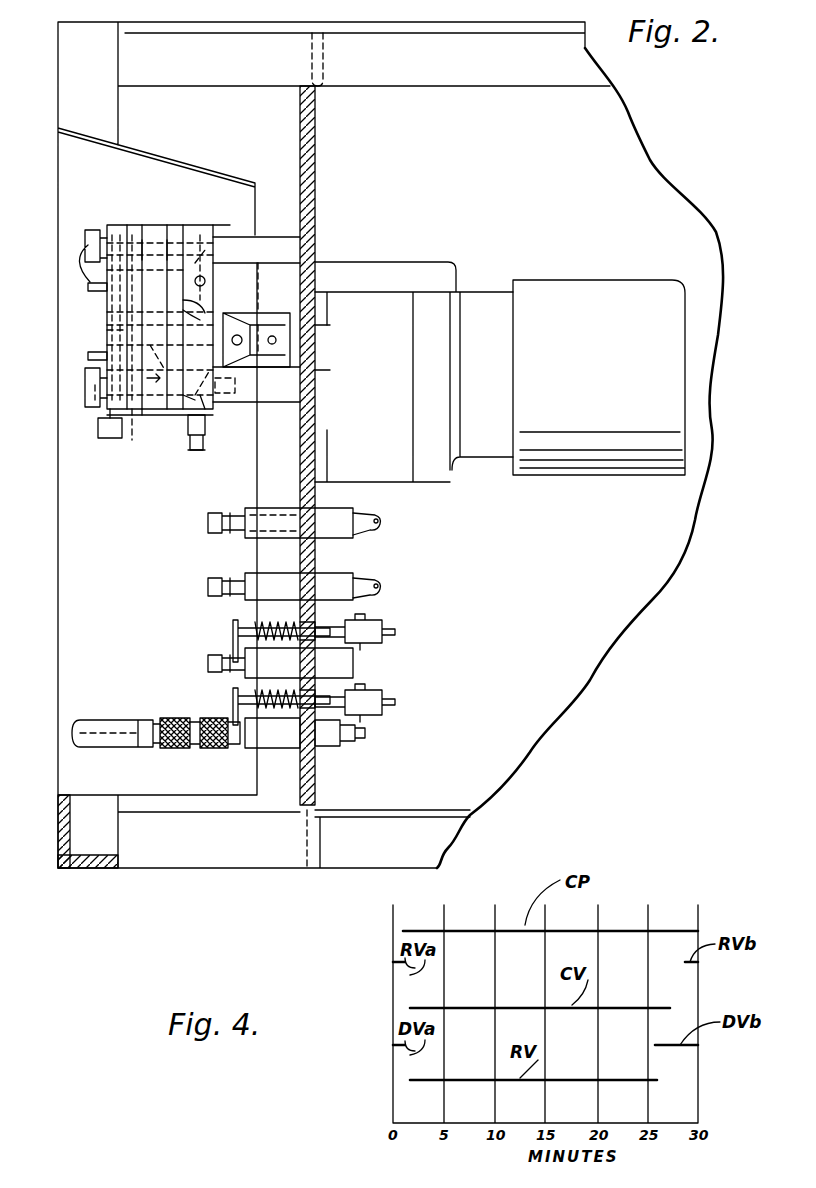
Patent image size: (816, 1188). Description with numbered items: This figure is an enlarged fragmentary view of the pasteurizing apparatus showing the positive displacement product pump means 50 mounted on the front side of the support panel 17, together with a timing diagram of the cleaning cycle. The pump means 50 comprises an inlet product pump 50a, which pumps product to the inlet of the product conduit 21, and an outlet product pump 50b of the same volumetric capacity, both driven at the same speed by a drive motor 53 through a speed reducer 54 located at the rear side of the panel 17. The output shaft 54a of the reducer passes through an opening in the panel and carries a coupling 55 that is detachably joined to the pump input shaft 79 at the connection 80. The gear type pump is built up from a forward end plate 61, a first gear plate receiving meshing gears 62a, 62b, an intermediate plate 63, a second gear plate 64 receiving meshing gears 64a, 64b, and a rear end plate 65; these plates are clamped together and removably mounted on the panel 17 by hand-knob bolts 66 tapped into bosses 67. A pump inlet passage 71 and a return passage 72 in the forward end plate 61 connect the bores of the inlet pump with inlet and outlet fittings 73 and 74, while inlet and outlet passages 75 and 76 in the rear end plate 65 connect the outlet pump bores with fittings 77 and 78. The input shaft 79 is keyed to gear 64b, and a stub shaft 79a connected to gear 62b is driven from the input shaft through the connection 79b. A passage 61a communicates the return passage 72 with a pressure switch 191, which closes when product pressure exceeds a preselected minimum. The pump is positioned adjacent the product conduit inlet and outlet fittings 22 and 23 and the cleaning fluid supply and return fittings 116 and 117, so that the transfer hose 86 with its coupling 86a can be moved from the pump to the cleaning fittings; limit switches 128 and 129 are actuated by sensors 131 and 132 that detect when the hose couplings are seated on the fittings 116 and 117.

The support panel 17 is at (316, 185).
The product conduit 21 is at (380, 520).
The inlet fitting 22 is at (240, 515).
The outlet fitting 23 is at (240, 578).
The product pump means 50 is at (155, 228).
The inlet product pump 50a is at (150, 228).
The outlet product pump 50b is at (180, 228).
The drive motor 53 is at (582, 285).
The speed reducer 54 is at (440, 270).
The output shaft 54a is at (316, 335).
The coupling 55 is at (316, 372).
The forward end plate 61 is at (117, 228).
The passage 61a is at (95, 390).
The pump gear 62a is at (127, 228).
The pump gear 62b is at (130, 412).
The intermediate plate 63 is at (150, 412).
The second gear plate 64 is at (190, 412).
The pump gear 64a is at (200, 228).
The pump gear 64b is at (200, 395).
The rear end plate 65 is at (205, 400).
The bolts 66 is at (95, 228).
The bosses 67 is at (260, 240).
The pump inlet passage 71 is at (105, 295).
The pump return passage 72 is at (105, 340).
The inlet fitting 73 is at (88, 235).
The outlet fitting 74 is at (88, 362).
The inlet passage 75 is at (210, 290).
The outlet passage 76 is at (235, 385).
The inlet fitting 77 is at (215, 240).
The outlet fitting 78 is at (200, 447).
The input shaft 79 is at (213, 305).
The stub shaft 79a is at (107, 328).
The connection 79b is at (158, 374).
The coupling connection 80 is at (237, 340).
The transfer hose 86 is at (100, 725).
The hose coupling 86a is at (210, 748).
The cleaning fluid supply fitting 116 is at (240, 660).
The cleaning fluid return fitting 117 is at (260, 740).
The limit switch 128 is at (372, 630).
The limit switch 129 is at (372, 700).
The sensor 131 is at (240, 625).
The sensor 132 is at (245, 695).
The pressure switch 191 is at (105, 440).